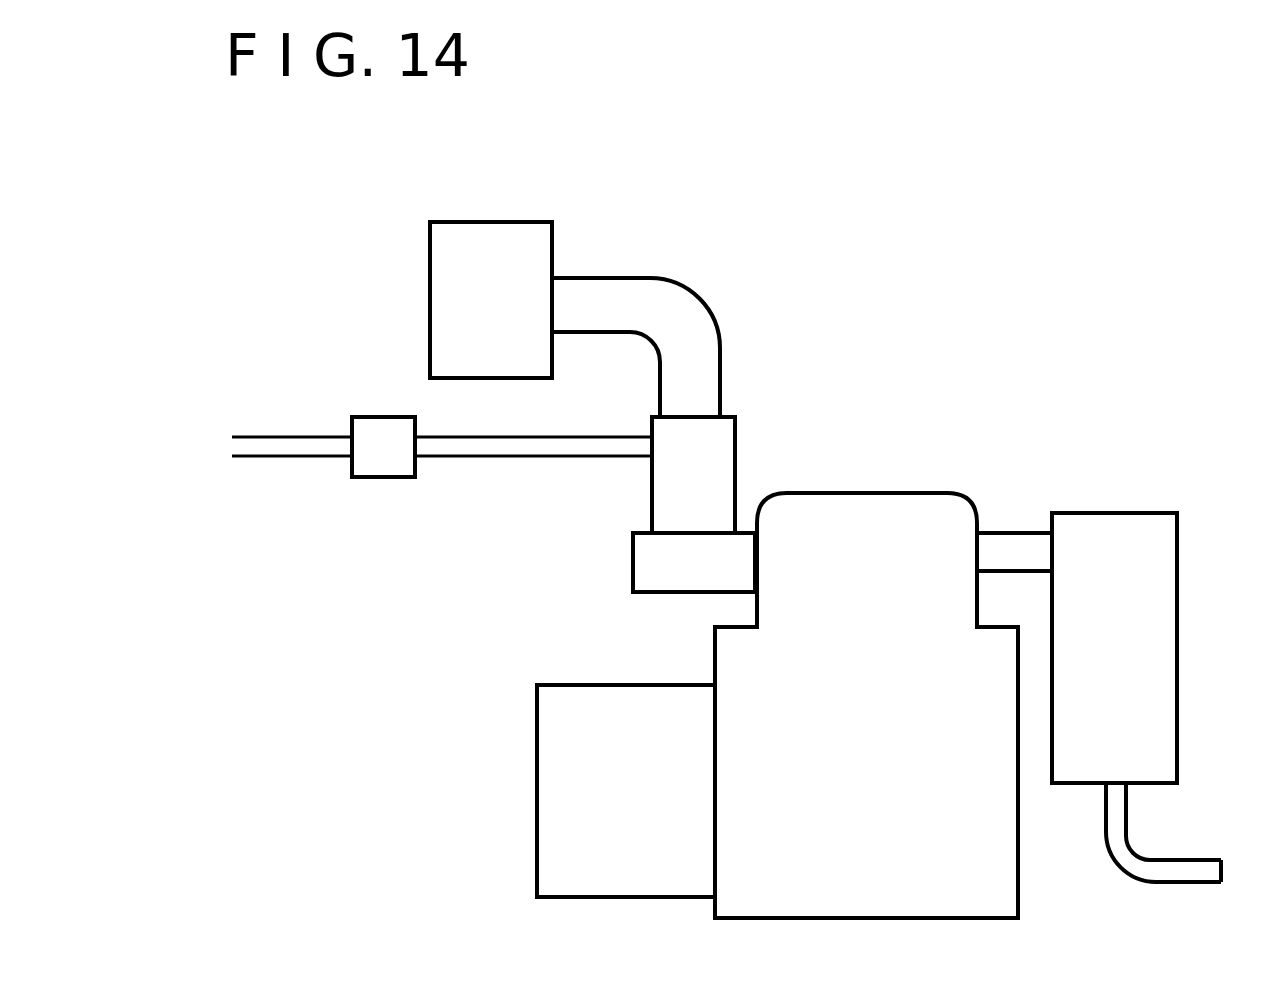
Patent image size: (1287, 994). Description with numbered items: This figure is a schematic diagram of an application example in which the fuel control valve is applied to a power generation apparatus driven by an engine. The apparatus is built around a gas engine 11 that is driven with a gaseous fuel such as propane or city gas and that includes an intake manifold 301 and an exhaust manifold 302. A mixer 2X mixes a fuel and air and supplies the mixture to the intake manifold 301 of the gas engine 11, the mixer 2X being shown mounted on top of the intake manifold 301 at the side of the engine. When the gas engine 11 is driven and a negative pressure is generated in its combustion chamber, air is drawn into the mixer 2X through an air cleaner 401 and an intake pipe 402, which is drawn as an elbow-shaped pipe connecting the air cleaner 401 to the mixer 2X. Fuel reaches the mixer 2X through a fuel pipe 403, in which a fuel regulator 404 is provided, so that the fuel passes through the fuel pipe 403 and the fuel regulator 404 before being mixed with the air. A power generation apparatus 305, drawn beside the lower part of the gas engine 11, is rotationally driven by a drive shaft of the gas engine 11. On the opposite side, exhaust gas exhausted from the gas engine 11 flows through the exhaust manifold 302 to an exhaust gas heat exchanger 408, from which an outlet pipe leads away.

The air cleaner 401 is at (505, 255).
The intake pipe 402 is at (663, 307).
The mixer 2X is at (718, 437).
The fuel pipe 403 is at (255, 447).
The fuel regulator 404 is at (372, 467).
The intake manifold 301 is at (688, 578).
The gas engine 11 is at (903, 532).
The power generation apparatus 305 is at (557, 782).
The exhaust manifold 302 is at (1017, 540).
The exhaust gas heat exchanger 408 is at (1160, 592).